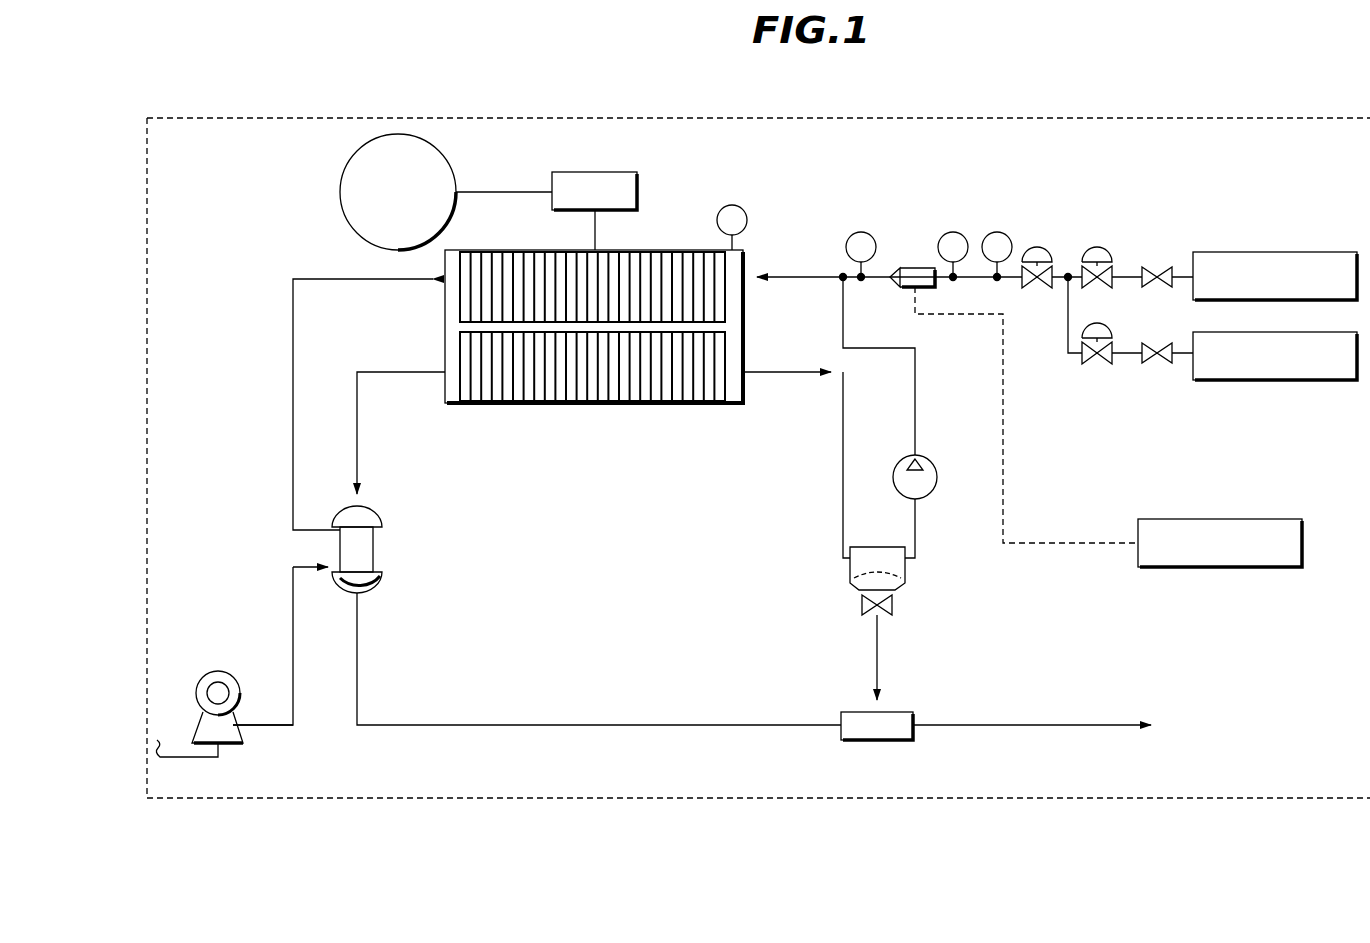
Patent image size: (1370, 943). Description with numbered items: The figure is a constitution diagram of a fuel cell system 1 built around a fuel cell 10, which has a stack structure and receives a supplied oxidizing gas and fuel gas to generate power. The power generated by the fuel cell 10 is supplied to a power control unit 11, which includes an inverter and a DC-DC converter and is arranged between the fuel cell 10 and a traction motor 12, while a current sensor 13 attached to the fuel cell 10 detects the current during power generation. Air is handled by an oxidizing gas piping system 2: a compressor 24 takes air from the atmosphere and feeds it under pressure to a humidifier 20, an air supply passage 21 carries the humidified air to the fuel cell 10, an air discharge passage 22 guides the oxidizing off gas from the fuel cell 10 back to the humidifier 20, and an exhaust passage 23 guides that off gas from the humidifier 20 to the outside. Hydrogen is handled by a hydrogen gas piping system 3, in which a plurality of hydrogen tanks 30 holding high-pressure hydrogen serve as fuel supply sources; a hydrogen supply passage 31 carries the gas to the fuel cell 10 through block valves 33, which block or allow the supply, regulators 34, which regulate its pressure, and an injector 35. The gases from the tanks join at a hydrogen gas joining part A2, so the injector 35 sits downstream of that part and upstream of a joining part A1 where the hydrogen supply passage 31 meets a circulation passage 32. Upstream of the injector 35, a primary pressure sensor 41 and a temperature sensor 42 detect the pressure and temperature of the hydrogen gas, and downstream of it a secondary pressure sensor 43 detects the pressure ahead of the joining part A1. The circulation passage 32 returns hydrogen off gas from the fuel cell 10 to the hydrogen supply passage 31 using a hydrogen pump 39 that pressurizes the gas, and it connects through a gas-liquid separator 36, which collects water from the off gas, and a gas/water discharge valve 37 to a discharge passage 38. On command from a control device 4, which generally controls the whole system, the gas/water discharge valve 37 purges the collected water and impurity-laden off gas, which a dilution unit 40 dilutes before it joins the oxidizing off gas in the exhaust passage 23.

The fuel cell system 1 is at (588, 108).
The oxidizing gas piping system 2 is at (402, 502).
The hydrogen gas piping system 3 is at (830, 552).
The control device 4 is at (1216, 519).
The fuel cell 10 is at (690, 404).
The power control unit 11 is at (638, 192).
The traction motor 12 is at (342, 206).
The current sensor 13 is at (729, 208).
The humidifier 20 is at (375, 556).
The air supply passage 21 is at (293, 478).
The air discharge passage 22 is at (358, 470).
The exhaust passage 23 is at (776, 724).
The compressor 24 is at (228, 672).
The hydrogen tank 30 is at (1305, 252).
The hydrogen supply passage 31 is at (797, 274).
The circulation passage 32 is at (842, 510).
The block valve 33 is at (1154, 275).
The regulator 34 is at (1037, 249).
The injector 35 is at (915, 266).
The gas-liquid separator 36 is at (862, 547).
The gas/water discharge valve 37 is at (866, 606).
The discharge passage 38 is at (878, 668).
The hydrogen pump 39 is at (930, 466).
The dilution unit 40 is at (914, 714).
The primary pressure sensor 41 is at (955, 232).
The temperature sensor 42 is at (998, 232).
The secondary pressure sensor 43 is at (862, 232).
The joining part A1 is at (840, 280).
The hydrogen gas joining part A2 is at (1066, 282).